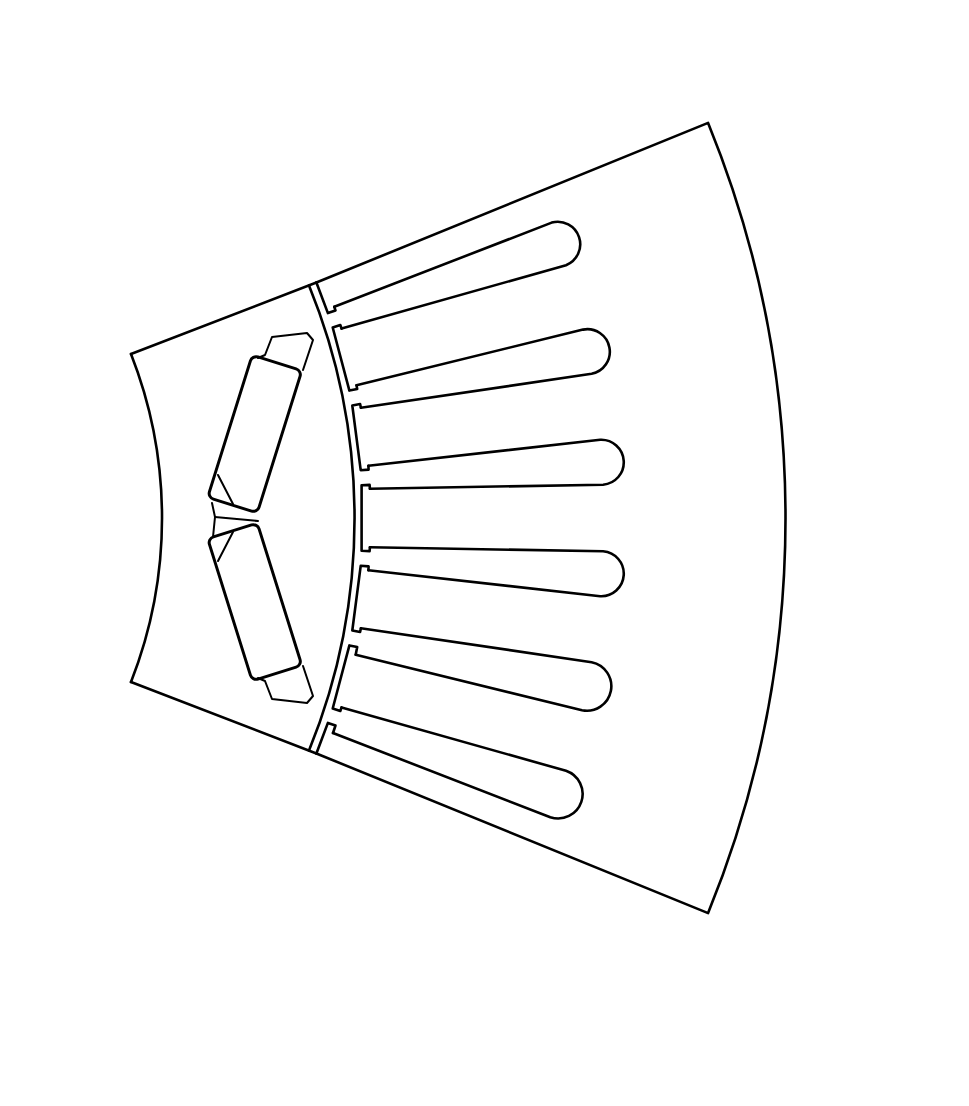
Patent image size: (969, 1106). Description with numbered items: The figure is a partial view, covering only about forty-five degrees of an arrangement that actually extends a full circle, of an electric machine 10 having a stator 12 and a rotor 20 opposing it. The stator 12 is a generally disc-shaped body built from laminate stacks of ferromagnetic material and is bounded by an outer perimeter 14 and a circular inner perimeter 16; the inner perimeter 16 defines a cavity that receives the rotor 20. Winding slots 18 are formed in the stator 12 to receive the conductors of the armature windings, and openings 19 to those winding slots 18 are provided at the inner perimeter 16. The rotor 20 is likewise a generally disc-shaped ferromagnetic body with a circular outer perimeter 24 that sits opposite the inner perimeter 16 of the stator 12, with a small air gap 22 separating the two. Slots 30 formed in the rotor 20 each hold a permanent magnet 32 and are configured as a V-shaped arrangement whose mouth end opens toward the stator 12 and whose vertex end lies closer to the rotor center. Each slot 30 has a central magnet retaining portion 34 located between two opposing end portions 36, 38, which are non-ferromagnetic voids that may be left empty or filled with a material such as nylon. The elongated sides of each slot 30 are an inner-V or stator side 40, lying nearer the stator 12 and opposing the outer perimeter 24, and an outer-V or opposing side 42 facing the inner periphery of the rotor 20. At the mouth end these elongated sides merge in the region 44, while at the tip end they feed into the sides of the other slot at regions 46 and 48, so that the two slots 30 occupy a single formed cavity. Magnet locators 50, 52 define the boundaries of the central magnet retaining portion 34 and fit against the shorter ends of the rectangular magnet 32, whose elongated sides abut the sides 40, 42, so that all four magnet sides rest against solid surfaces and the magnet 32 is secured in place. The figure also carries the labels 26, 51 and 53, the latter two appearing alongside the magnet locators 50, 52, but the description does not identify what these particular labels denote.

The electric machine 10 is at (364, 112).
The stator 12 is at (564, 490).
The outer perimeter 14 is at (764, 290).
The inner perimeter 16 is at (283, 733).
The winding slots 18 is at (566, 236).
The openings 19 is at (336, 318).
The rotor 20 is at (191, 506).
The air gap 22 is at (324, 321).
The circular outer perimeter 24 is at (273, 703).
The rotor inner surface 26 is at (168, 655).
The slots 30 is at (231, 417).
The permanent magnet 32 is at (131, 354).
The central magnet retaining portion 34 is at (221, 440).
The end portion 36 is at (285, 345).
The end portion 38 is at (220, 467).
The inner-V side 40 is at (284, 437).
The outer-V side 42 is at (242, 376).
The merge region 44 is at (307, 333).
The connecting region 46 is at (212, 517).
The connecting region 48 is at (262, 520).
The magnet locator 50 is at (159, 301).
The pocket end surface 51 is at (265, 352).
The magnet locator 52 is at (139, 484).
The pocket inner surface 53 is at (208, 503).